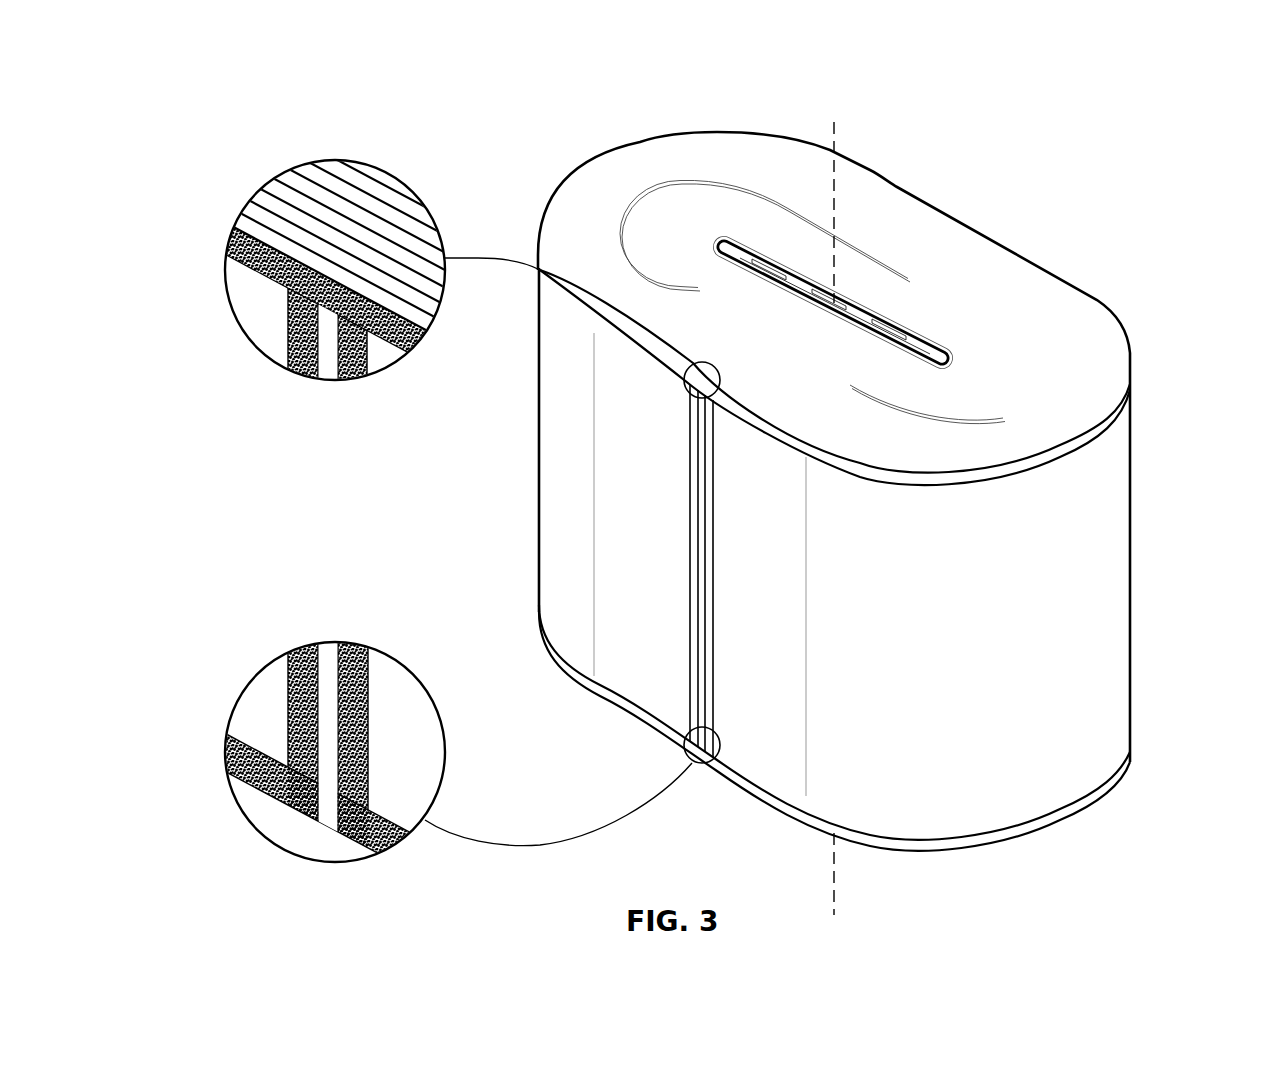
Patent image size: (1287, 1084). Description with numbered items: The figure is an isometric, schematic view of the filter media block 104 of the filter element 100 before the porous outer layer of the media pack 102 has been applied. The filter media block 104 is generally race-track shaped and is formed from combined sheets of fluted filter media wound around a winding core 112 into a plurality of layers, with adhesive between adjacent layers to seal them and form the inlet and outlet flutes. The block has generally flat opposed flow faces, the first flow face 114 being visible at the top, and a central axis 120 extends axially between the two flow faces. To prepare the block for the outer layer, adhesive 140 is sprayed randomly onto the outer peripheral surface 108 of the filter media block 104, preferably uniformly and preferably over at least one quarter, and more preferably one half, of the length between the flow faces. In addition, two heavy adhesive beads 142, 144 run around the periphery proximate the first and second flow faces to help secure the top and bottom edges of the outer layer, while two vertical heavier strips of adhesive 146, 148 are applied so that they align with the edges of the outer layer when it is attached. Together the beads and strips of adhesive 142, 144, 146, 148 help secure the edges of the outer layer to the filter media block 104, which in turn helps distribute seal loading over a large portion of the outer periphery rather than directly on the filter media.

The filter element 100 is at (905, 148).
The media pack 102 is at (969, 214).
The filter media block 104 is at (1017, 273).
The outer peripheral surface 108 is at (331, 326).
The winding core 112 is at (755, 258).
The first flow face 114 is at (1092, 322).
The central axis 120 is at (836, 132).
The adhesive 140 is at (1130, 453).
The heavy adhesive bead 142 is at (1128, 406).
The heavy adhesive bead 144 is at (636, 718).
The vertical strip of adhesive 146 is at (292, 315).
The vertical strip of adhesive 148 is at (347, 380).